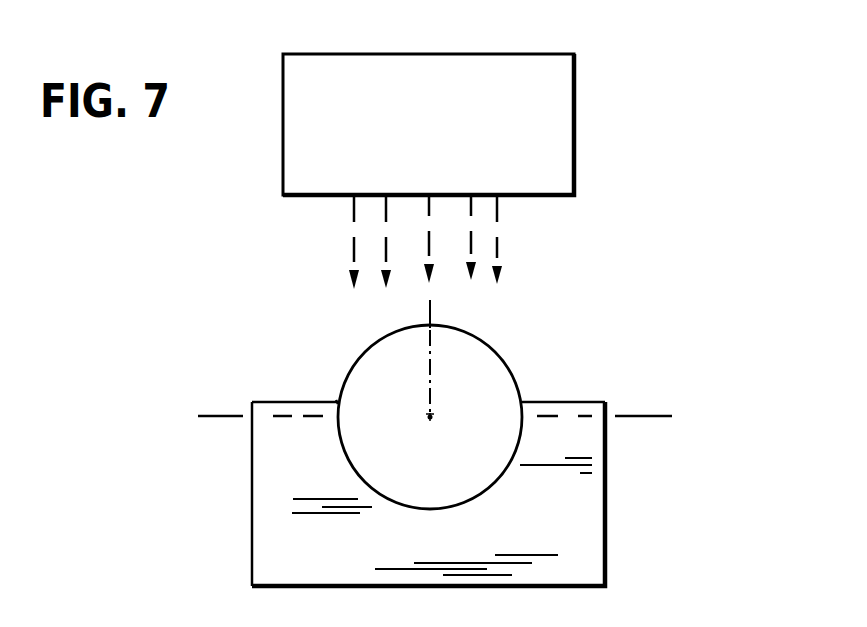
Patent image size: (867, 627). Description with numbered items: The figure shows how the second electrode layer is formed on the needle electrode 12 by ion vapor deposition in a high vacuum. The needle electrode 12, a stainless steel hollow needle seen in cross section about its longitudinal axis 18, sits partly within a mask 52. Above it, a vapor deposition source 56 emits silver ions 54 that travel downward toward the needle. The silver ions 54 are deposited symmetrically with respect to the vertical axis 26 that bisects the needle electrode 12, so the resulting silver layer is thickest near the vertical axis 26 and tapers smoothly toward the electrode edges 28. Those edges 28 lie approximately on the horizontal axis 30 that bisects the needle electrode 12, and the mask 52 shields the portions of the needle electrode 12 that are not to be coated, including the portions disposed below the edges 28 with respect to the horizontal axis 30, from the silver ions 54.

The silver ions 54 is at (497, 220).
The vapor deposition source 56 is at (285, 140).
The mask 52 is at (268, 490).
The horizontal axis 30 is at (638, 416).
The needle electrode 12 is at (512, 373).
The longitudinal axis 18 is at (430, 417).
The vertical axis 26 is at (430, 313).
The electrode edges 28 is at (338, 400).